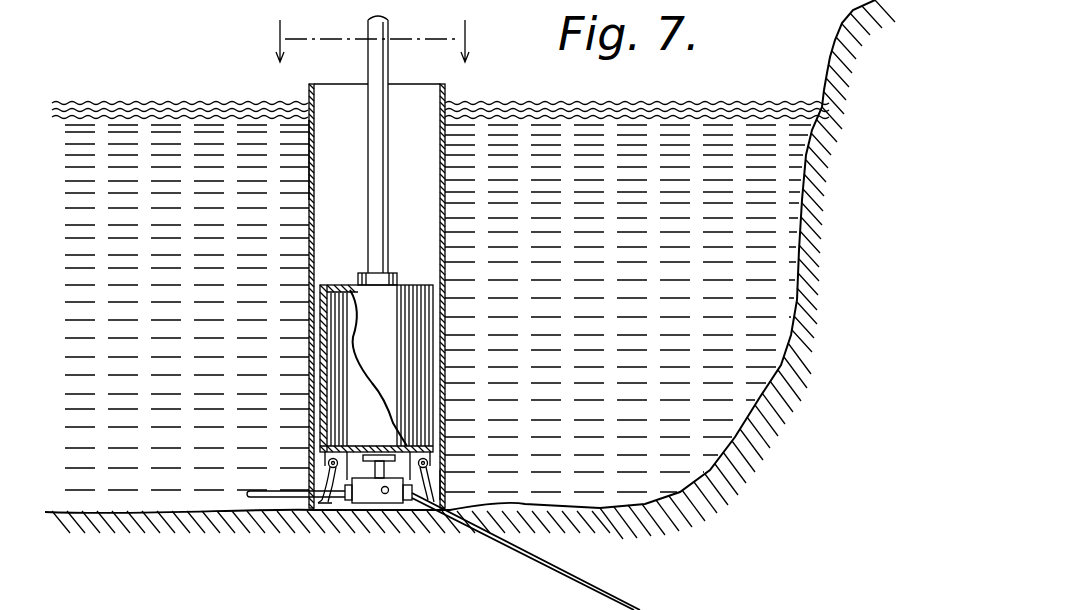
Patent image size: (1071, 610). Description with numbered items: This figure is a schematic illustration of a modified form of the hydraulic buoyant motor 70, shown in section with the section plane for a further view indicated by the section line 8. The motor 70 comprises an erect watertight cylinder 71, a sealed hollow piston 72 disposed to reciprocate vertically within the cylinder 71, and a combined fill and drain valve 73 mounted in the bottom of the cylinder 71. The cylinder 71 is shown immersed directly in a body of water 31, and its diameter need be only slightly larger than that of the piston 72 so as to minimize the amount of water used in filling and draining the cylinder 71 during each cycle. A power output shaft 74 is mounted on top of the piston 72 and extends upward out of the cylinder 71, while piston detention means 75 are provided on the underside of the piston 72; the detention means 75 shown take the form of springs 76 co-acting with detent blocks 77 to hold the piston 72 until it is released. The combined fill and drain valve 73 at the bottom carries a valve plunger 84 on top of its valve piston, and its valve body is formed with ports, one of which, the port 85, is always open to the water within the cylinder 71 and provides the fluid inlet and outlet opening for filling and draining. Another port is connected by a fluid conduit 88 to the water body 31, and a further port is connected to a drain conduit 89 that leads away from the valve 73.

The section line 8- 8 is at (372, 41).
The body of water 31 is at (590, 272).
The hydraulic buoyant motor 70 is at (458, 88).
The watertight cylinder 71 is at (310, 150).
The sealed hollow piston 72 is at (425, 316).
The combined fill and drain valve 73 is at (368, 494).
The power output shaft 74 is at (370, 180).
The piston detention means 75 is at (456, 475).
The springs 76 is at (328, 463).
The detent blocks 77 is at (333, 483).
The valve plunger 84 is at (380, 460).
The port 85 is at (386, 494).
The fluid conduit 88 is at (252, 491).
The drain conduit 89 is at (640, 604).